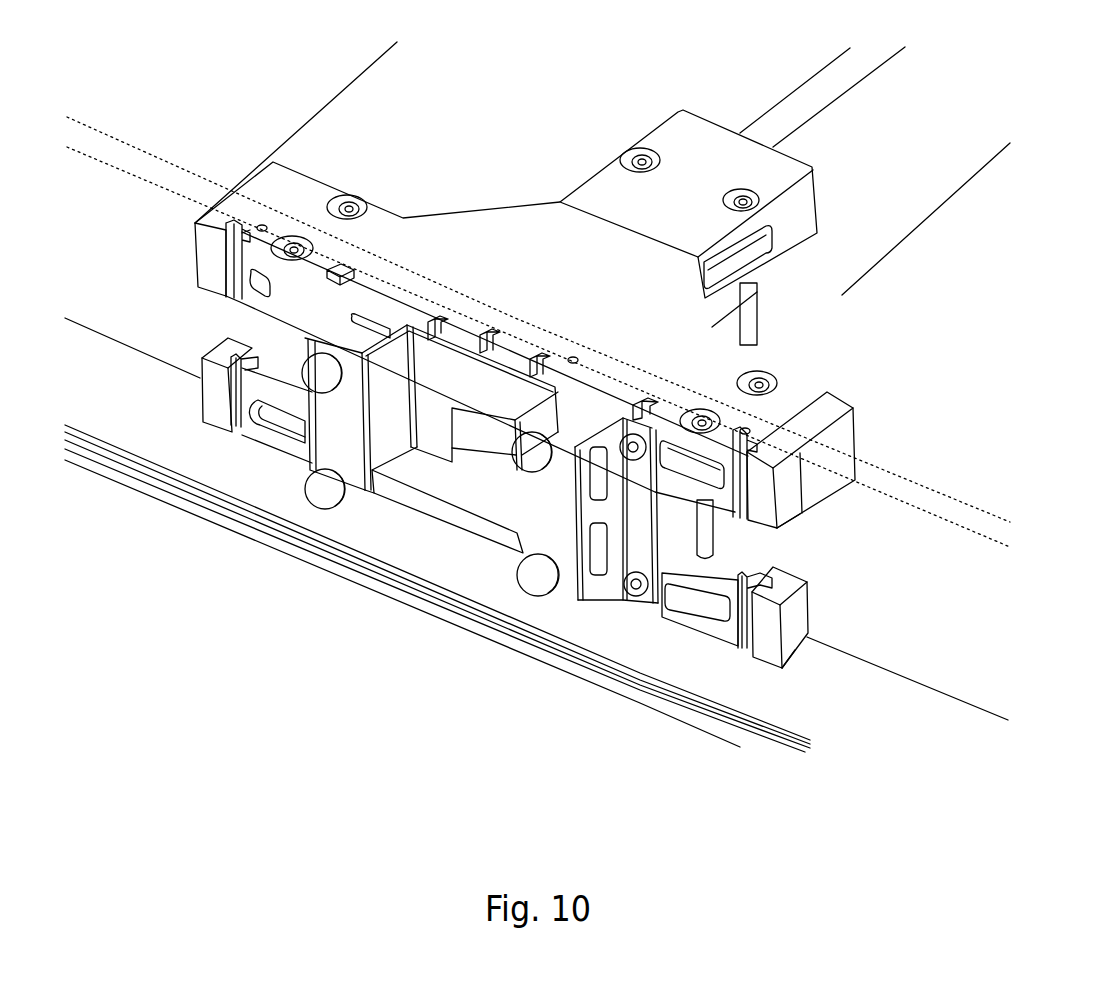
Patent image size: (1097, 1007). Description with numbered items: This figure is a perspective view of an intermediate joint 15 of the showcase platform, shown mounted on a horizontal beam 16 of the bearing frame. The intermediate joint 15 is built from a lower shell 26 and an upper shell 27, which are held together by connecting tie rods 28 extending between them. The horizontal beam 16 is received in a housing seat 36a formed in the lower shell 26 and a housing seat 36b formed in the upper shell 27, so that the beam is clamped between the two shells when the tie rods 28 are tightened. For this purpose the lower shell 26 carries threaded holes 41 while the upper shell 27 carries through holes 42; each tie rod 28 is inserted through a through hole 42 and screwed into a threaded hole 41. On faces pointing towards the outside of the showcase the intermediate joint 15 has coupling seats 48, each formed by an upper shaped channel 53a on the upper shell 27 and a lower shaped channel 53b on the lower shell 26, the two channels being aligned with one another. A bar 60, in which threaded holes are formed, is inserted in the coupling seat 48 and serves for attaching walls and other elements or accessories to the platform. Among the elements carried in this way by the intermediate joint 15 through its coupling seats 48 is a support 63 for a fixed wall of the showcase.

The intermediate joint 15 is at (551, 184).
The horizontal beam 16 is at (885, 195).
The lower shell 26 is at (792, 650).
The upper shell 27 is at (790, 500).
The connecting tie rod 28 is at (720, 530).
The housing seat 36a is at (820, 448).
The housing seat 36b is at (812, 603).
The threaded hole 41 is at (288, 372).
The through hole 42 is at (714, 404).
The coupling seat 48 is at (240, 221).
The upper shaped channel 53a is at (735, 200).
The lower shaped channel 53b is at (643, 610).
The bar 60 is at (350, 273).
The support 63 is at (447, 520).